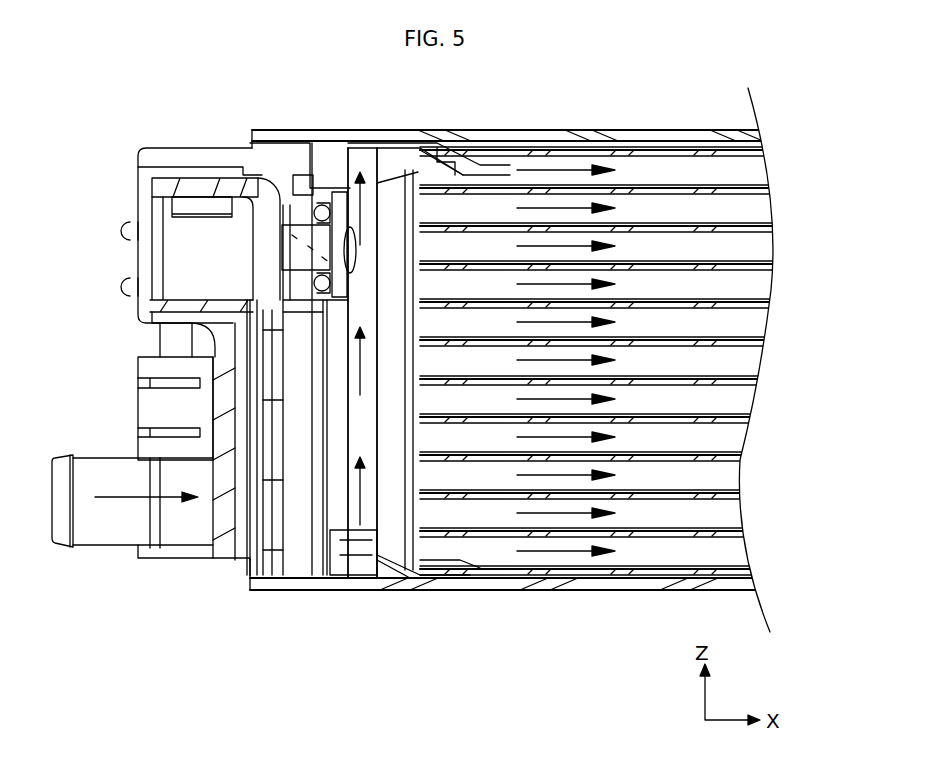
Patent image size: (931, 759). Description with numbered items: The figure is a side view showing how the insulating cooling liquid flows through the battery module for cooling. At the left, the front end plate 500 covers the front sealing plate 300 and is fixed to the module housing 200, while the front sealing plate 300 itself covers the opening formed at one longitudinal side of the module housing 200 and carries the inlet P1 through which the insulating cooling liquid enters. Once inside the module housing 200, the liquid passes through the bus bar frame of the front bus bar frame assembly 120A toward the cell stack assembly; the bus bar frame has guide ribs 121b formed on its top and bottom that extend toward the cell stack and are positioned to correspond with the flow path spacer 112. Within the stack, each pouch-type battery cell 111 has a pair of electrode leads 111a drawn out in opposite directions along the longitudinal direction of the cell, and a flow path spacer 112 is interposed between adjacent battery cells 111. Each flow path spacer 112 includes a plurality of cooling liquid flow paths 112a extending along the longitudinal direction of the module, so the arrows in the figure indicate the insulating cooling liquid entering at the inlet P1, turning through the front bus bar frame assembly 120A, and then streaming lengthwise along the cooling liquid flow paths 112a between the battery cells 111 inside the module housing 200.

The module housing 200 is at (690, 130).
The flow path spacer 112 is at (748, 340).
The cooling liquid flow path 112a is at (725, 290).
The battery cell 111 is at (655, 553).
The electrode lead 111a is at (355, 535).
The front bus bar frame assembly 120A is at (356, 175).
The guide rib 121b is at (437, 150).
The front sealing plate 300 is at (303, 195).
The front end plate 500 is at (142, 408).
The inlet P1 is at (62, 460).